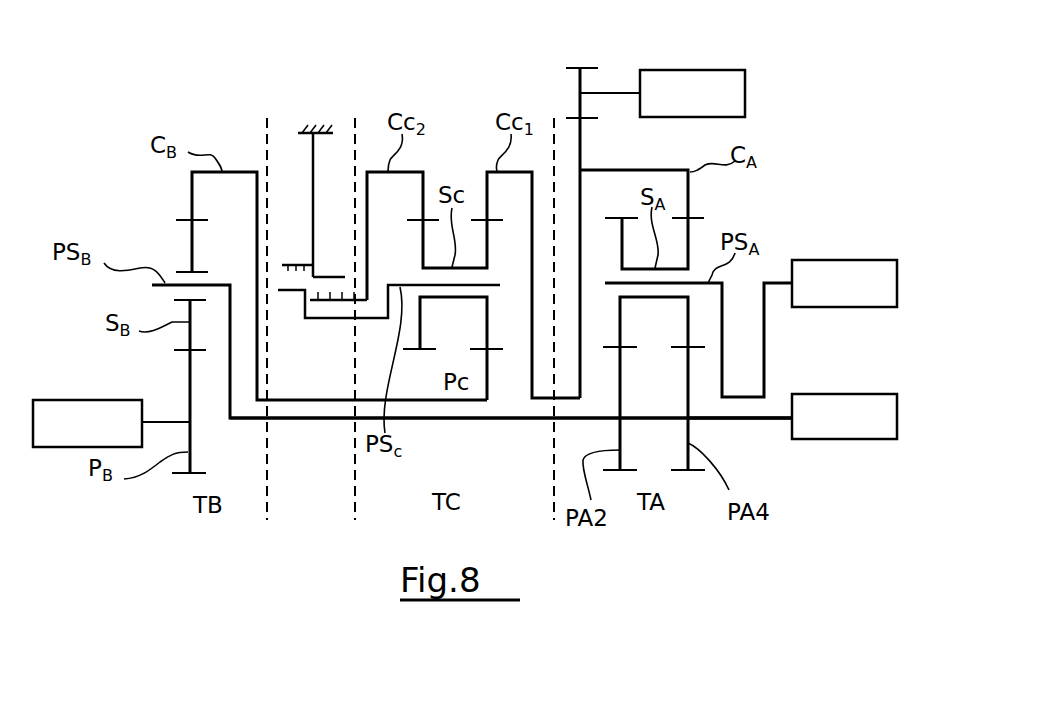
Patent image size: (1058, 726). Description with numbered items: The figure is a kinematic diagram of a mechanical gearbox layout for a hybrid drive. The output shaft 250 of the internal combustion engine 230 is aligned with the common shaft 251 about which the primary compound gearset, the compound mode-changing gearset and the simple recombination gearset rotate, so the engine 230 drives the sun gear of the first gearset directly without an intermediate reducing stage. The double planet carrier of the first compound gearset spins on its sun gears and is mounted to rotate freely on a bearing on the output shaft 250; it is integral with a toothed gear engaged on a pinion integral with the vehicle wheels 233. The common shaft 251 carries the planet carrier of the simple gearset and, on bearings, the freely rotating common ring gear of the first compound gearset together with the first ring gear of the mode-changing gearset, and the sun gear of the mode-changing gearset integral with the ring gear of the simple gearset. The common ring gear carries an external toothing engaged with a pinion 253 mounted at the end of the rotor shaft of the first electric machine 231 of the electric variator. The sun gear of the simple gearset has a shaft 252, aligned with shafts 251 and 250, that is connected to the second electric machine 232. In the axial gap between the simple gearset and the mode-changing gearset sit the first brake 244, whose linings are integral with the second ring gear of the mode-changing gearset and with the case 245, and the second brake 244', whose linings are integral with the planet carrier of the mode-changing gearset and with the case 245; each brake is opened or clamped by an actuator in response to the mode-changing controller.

The internal combustion engine 230 is at (844, 416).
The first electric machine 231 is at (662, 93).
The second electric machine 232 is at (111, 423).
The vehicle wheels 233 is at (751, 328).
The first brake 244 is at (286, 183).
The second brake 244' is at (389, 380).
The case 245 is at (316, 128).
The output shaft 250 is at (766, 420).
The common shaft 251 is at (523, 420).
The shaft 252 is at (165, 421).
The pinion 253 is at (584, 56).